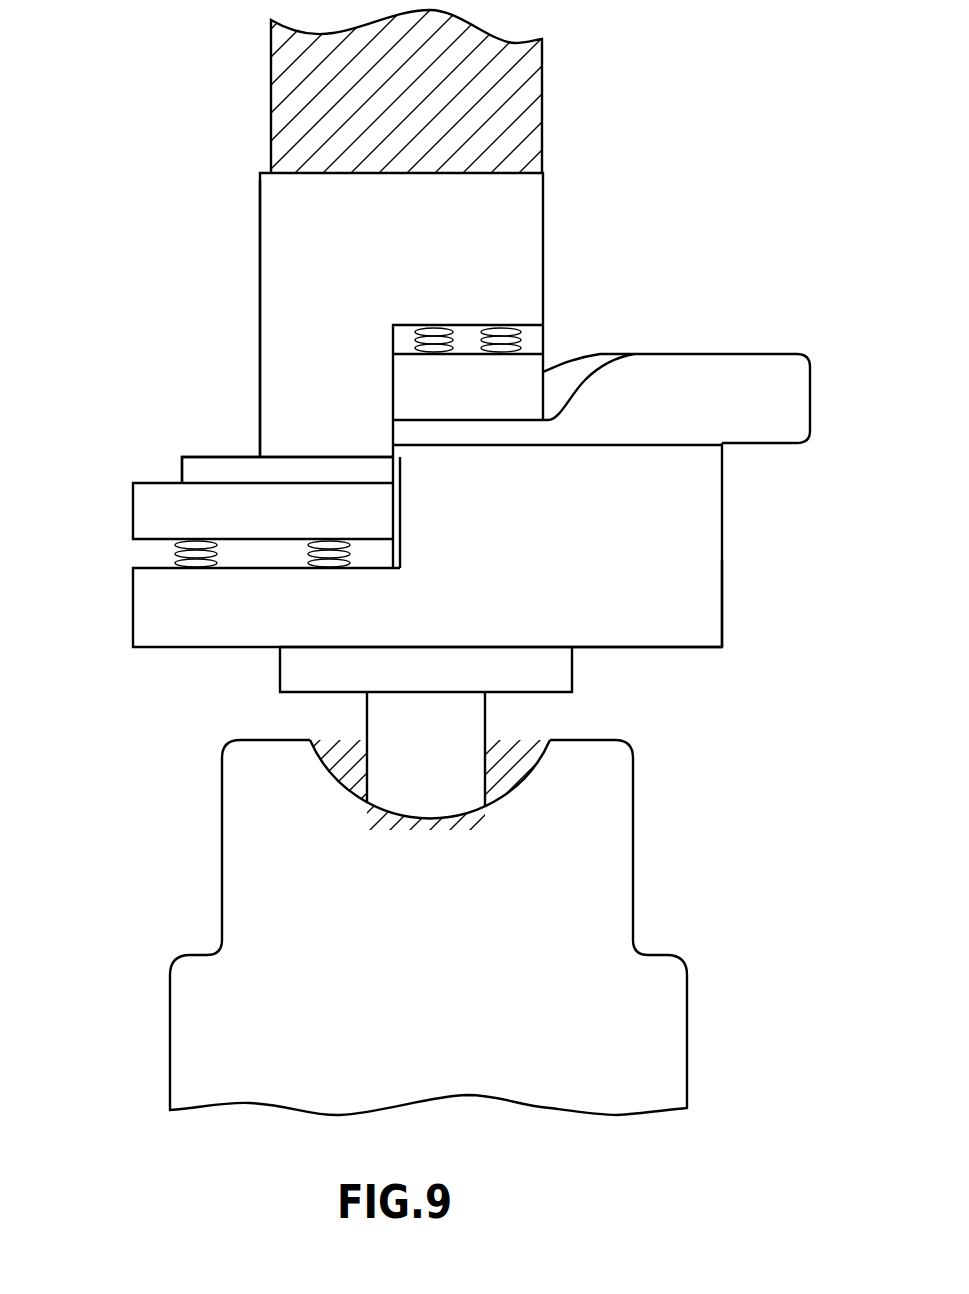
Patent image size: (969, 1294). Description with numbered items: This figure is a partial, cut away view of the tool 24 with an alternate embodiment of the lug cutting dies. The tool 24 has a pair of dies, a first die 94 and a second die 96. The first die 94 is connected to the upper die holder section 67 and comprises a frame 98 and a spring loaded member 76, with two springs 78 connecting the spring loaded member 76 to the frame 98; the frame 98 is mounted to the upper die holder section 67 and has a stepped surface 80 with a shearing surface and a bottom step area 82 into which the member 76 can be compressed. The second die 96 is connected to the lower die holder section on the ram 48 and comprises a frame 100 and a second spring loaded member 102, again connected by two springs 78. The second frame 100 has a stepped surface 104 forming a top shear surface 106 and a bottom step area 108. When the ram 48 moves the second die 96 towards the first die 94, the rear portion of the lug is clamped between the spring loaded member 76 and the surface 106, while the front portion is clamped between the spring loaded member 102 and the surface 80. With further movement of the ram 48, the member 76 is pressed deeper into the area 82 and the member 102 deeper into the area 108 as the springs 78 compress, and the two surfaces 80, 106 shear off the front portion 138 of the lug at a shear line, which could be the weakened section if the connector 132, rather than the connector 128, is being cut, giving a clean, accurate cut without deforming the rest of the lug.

The upper die holder section 67 is at (522, 89).
The first die 94 is at (545, 200).
The frame 98 is at (272, 237).
The area 82 is at (468, 337).
The spring loaded member 76 is at (545, 372).
The connector 128 is at (691, 359).
The connector 132 is at (676, 356).
The springs 78 is at (500, 315).
The stepped surface 80 is at (377, 455).
The front portion 138 is at (177, 463).
The second spring loaded member 102 is at (140, 514).
The top shear surface 106 is at (402, 448).
The stepped surface 104 is at (662, 447).
The frame 100 is at (710, 555).
The second die 96 is at (724, 618).
The bottom step area 108 is at (250, 557).
The ram 48 is at (457, 775).
The tool 24 is at (235, 1092).